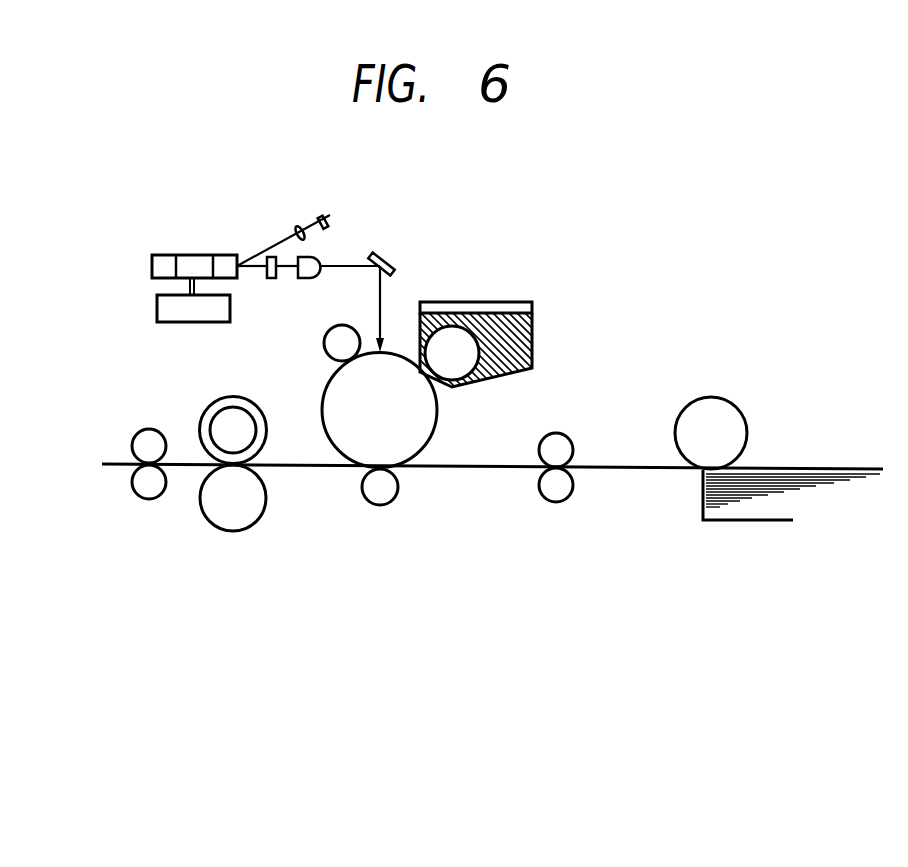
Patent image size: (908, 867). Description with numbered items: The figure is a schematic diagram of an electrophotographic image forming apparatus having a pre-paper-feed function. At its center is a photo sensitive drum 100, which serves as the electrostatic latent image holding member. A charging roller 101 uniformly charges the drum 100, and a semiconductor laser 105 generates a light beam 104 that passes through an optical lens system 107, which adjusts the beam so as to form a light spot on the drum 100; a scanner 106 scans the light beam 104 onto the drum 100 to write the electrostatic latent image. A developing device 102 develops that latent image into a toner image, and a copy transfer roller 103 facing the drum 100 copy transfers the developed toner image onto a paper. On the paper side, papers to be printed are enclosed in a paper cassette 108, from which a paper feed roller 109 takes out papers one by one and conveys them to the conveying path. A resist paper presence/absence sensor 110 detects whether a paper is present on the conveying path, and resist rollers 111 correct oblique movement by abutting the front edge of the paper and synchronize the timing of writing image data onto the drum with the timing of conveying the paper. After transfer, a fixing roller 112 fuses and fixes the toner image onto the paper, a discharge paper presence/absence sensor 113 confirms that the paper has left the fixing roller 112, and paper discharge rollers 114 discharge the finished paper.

The photo sensitive drum 100 is at (437, 420).
The charging roller 101 is at (328, 352).
The developing device 102 is at (533, 330).
The copy transfer roller 103 is at (395, 498).
The light beam 104 is at (382, 295).
The semiconductor laser 105 is at (335, 220).
The scanner 106 is at (206, 255).
The optical lens system 107 is at (302, 280).
The paper cassette 108 is at (808, 468).
The paper feed roller 109 is at (742, 409).
The resist paper presence/absence sensor 110 is at (619, 462).
The resist rollers 111 is at (558, 433).
The fixing roller 112 is at (218, 400).
The discharge paper presence/absence sensor 113 is at (180, 458).
The paper discharge rollers 114 is at (148, 499).